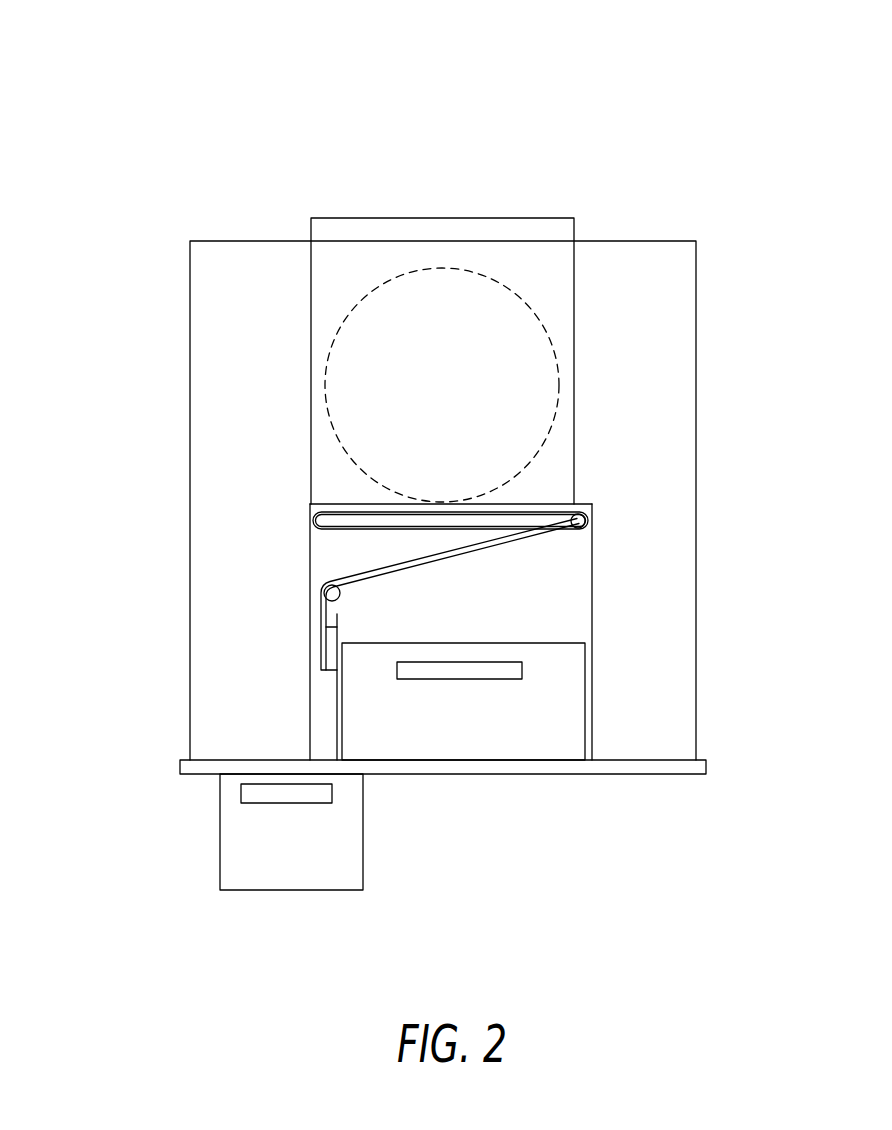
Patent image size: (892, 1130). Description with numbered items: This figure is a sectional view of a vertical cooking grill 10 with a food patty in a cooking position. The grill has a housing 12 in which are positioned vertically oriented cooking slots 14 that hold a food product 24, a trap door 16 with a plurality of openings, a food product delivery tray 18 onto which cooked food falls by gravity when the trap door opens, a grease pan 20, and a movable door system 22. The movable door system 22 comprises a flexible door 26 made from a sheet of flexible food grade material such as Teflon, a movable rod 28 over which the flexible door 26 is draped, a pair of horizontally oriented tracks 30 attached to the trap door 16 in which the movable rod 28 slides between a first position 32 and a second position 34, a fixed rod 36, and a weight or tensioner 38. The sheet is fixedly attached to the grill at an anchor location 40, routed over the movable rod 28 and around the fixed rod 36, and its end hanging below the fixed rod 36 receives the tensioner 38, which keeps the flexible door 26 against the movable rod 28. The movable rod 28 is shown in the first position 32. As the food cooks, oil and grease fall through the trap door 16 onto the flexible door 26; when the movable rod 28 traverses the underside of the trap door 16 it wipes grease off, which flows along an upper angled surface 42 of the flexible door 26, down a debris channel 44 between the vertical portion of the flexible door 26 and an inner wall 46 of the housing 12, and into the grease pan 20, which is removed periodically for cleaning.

The vertical cooking grill 10 is at (224, 95).
The housing 12 is at (190, 292).
The cooking slots 14 is at (330, 254).
The trap door 16 is at (585, 505).
The food product delivery tray 18 is at (570, 702).
The grease pan 20 is at (220, 832).
The movable door system 22 is at (282, 480).
The food product 24 is at (502, 283).
The flexible door 26 is at (546, 595).
The movable rod 28 is at (586, 513).
The tracks 30 is at (536, 518).
The first position 32 is at (588, 528).
The second position 34 is at (321, 518).
The fixed rod 36 is at (340, 593).
The tensioner 38 is at (321, 648).
The anchor location 40 is at (312, 510).
The upper angled surface 42 is at (452, 557).
The debris channel 44 is at (358, 505).
The inner wall 46 is at (310, 623).